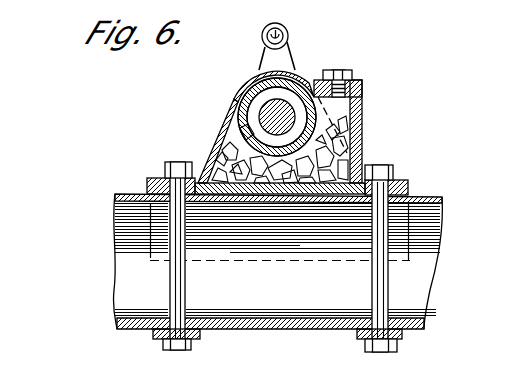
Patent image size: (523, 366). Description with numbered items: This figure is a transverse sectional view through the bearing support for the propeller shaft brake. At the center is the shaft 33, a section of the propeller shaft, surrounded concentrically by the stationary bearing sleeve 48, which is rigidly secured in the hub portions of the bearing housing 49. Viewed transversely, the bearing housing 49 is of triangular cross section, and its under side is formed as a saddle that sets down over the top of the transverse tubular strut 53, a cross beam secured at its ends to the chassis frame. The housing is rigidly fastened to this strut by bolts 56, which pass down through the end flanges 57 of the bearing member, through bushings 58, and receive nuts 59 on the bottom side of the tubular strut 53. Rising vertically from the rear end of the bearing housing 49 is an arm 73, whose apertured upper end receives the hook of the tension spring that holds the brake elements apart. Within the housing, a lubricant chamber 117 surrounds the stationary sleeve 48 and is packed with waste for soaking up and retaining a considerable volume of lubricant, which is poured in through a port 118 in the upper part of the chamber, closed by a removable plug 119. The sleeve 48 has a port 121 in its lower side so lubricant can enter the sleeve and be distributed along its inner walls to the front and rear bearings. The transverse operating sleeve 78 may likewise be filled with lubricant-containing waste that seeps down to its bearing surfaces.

The shaft 33 is at (275, 103).
The bearing sleeve 48 is at (243, 120).
The bearing housing 49 is at (243, 81).
The tubular strut 53 is at (273, 320).
The bolts 56 is at (183, 258).
The end flanges 57 is at (148, 182).
The bushings 58 is at (160, 177).
The nuts 59 is at (160, 341).
The arm 73 is at (280, 57).
The transverse operating sleeve 78 is at (287, 32).
The lubricant chamber 117 is at (220, 139).
The port 118 is at (362, 86).
The removable plug 119 is at (337, 77).
The port 121 is at (323, 152).